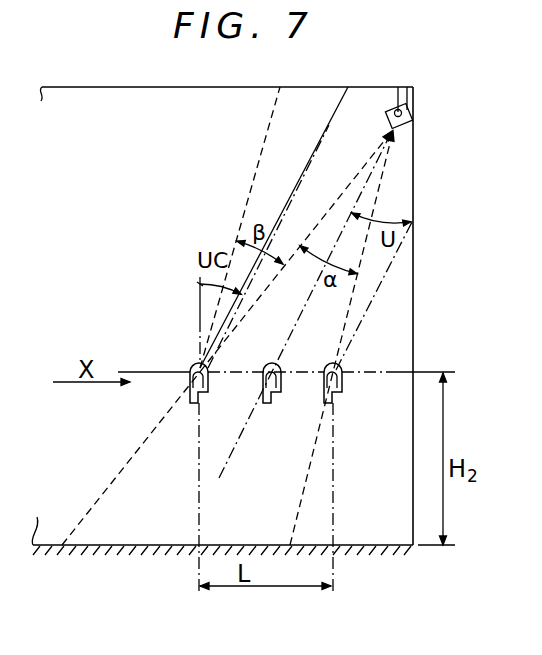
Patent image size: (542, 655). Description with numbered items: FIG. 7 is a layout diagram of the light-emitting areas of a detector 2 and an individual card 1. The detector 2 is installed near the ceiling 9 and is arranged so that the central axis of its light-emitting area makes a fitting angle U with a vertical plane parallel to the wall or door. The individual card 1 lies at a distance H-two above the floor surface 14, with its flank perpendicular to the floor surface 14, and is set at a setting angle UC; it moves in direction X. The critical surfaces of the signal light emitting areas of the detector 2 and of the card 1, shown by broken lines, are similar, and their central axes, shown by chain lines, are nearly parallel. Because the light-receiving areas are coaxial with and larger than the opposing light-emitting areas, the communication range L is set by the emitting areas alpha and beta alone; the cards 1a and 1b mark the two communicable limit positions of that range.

The ceiling 9 is at (363, 87).
The detector 2 is at (413, 122).
The individual card 1 is at (263, 387).
The individual card at communicable limit position 1a is at (191, 403).
The individual card at communicable limit position 1b is at (343, 388).
The floor surface 14 is at (367, 545).